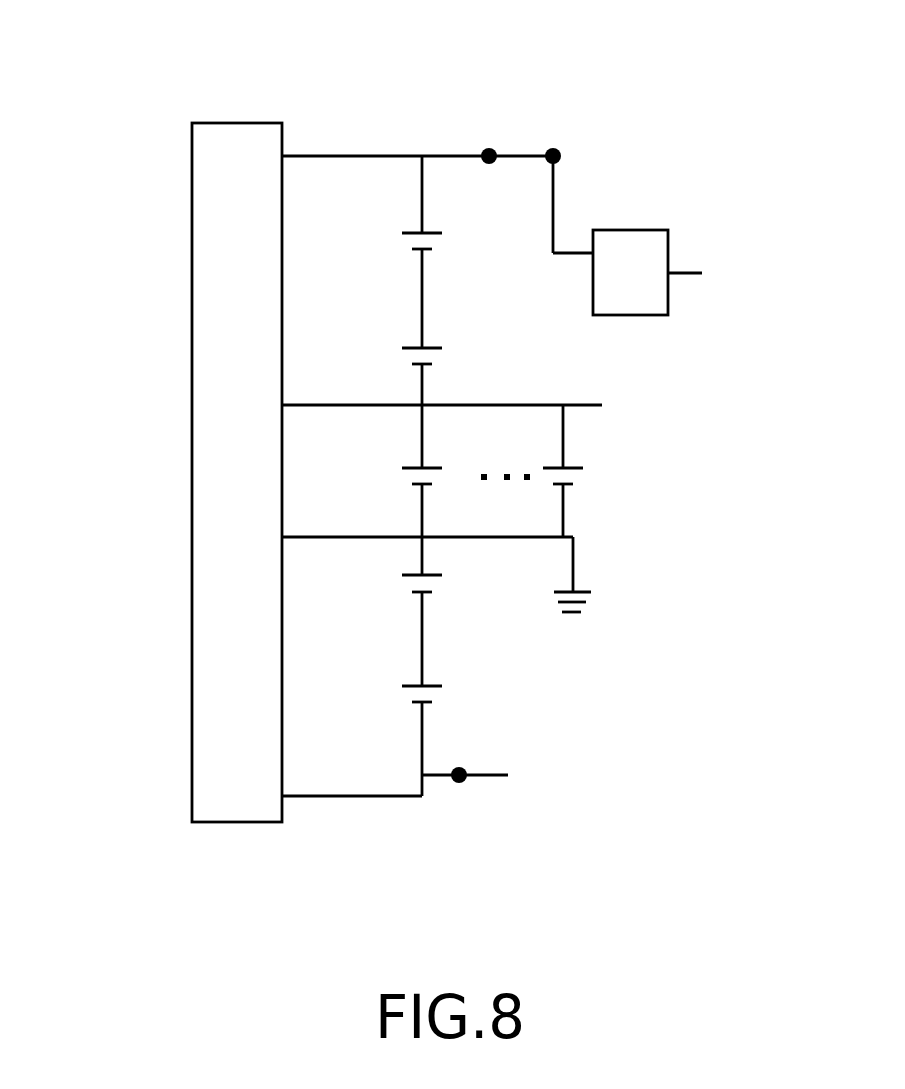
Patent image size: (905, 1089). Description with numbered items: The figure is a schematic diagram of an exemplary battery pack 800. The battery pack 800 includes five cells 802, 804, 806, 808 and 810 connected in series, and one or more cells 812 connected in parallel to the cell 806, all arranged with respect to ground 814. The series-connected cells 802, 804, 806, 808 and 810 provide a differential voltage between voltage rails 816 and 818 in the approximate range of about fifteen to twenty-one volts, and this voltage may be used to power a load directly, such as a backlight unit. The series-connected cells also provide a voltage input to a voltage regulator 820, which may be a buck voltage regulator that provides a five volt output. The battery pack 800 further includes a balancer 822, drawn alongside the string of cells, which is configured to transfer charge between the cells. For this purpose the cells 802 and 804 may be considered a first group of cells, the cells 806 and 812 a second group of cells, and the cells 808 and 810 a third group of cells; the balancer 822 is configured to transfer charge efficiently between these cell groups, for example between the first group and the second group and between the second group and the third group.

The battery pack 800 is at (510, 36).
The cell 802 is at (392, 240).
The cell 804 is at (396, 357).
The cell 806 is at (394, 480).
The cell 808 is at (390, 599).
The cell 810 is at (392, 696).
The cell 812 is at (577, 475).
The ground 814 is at (593, 598).
The voltage rail 816 is at (494, 150).
The voltage rail 818 is at (460, 783).
The voltage regulator 820 is at (612, 293).
The balancer 822 is at (192, 448).